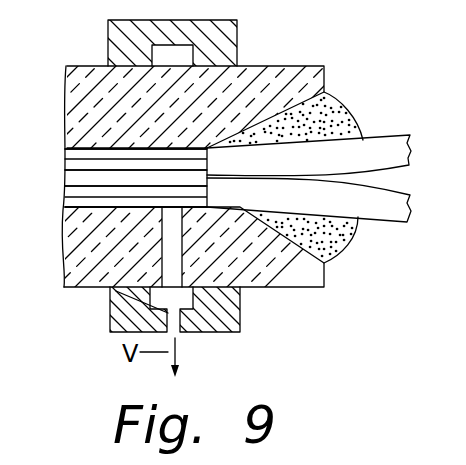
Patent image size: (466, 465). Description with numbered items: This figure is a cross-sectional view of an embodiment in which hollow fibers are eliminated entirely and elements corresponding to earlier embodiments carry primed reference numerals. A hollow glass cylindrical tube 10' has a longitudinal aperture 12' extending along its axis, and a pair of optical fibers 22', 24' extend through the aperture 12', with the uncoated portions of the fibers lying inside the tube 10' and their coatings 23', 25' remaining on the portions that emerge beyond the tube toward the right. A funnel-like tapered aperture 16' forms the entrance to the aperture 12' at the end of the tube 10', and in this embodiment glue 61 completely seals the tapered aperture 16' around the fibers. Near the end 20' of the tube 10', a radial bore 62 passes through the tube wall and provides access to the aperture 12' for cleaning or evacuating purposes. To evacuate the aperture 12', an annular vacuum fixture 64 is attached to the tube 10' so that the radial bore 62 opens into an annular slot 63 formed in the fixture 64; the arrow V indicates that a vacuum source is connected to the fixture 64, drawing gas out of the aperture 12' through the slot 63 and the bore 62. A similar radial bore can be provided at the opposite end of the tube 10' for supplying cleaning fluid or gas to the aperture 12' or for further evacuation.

The tube 10' is at (233, 150).
The end 20' is at (233, 200).
The aperture 12' is at (136, 198).
The optical fiber 22' is at (108, 166).
The optical fiber 24' is at (108, 197).
The coating 23' is at (328, 134).
The coating 25' is at (323, 222).
The glue 61 is at (342, 106).
The tapered aperture 16' is at (309, 239).
The radial bore 62 is at (180, 253).
The annular slot 63 is at (110, 309).
The annular vacuum fixture 64 is at (240, 314).